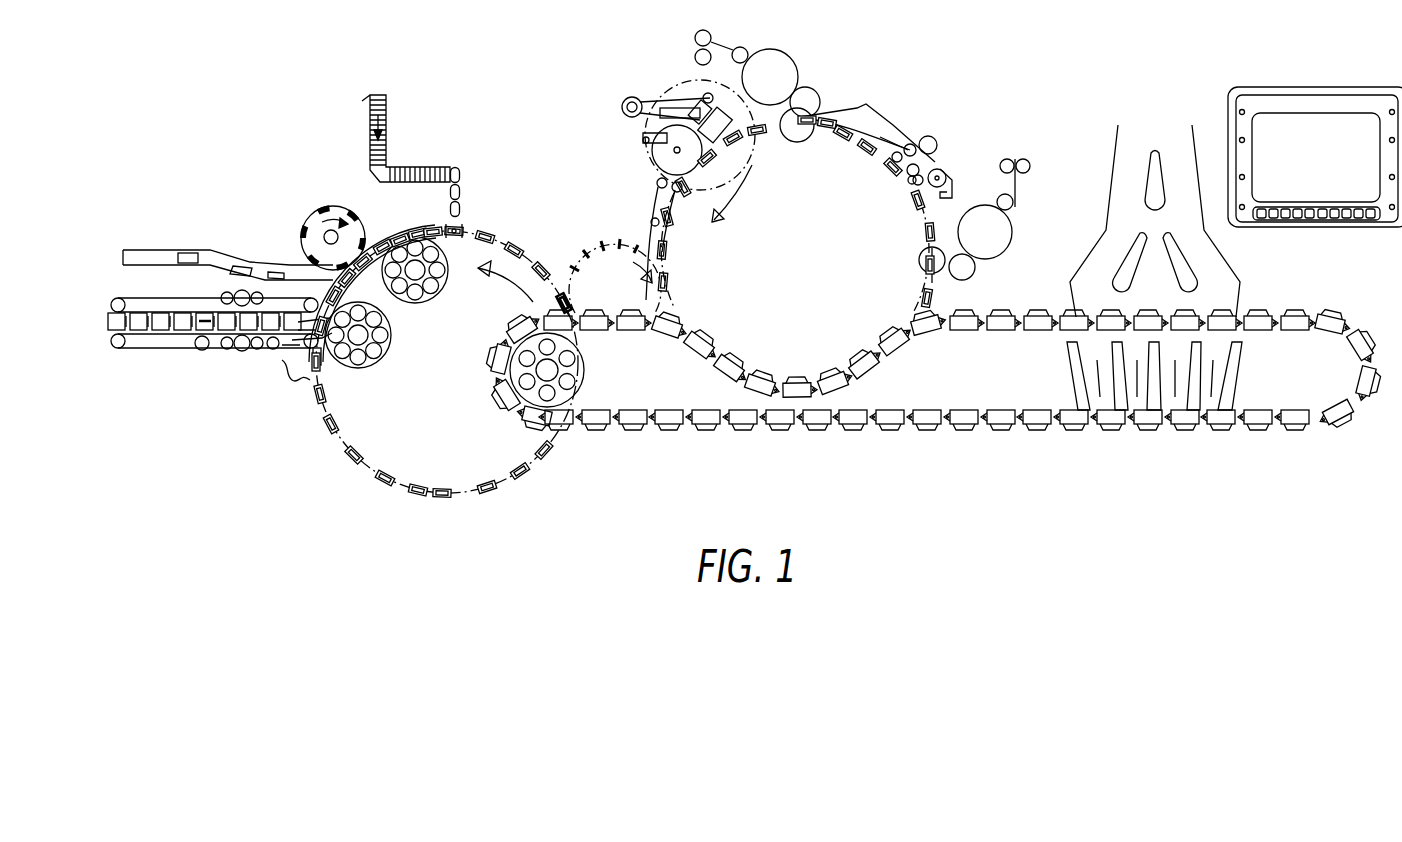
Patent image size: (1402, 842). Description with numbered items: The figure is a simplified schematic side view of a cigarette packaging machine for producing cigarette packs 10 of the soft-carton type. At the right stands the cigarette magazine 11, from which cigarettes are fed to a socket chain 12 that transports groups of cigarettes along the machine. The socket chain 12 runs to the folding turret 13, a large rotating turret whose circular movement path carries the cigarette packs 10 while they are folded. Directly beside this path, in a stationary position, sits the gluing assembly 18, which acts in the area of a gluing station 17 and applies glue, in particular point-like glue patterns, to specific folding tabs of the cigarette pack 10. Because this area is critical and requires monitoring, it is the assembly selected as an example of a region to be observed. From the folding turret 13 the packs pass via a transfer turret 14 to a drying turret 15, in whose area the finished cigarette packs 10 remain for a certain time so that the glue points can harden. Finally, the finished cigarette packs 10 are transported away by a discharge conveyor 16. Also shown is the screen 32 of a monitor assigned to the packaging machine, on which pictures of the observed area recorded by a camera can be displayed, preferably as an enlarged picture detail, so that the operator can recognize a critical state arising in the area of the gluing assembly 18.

The cigarette pack 10 is at (183, 328).
The cigarette magazine 11 is at (1157, 128).
The socket chain 12 is at (995, 446).
The folding turret 13 is at (838, 93).
The transfer turret 14 is at (597, 238).
The drying turret 15 is at (497, 219).
The discharge conveyor 16 is at (243, 360).
The gluing station 17 is at (657, 80).
The gluing assembly 18 is at (690, 97).
The screen 32 is at (1322, 128).